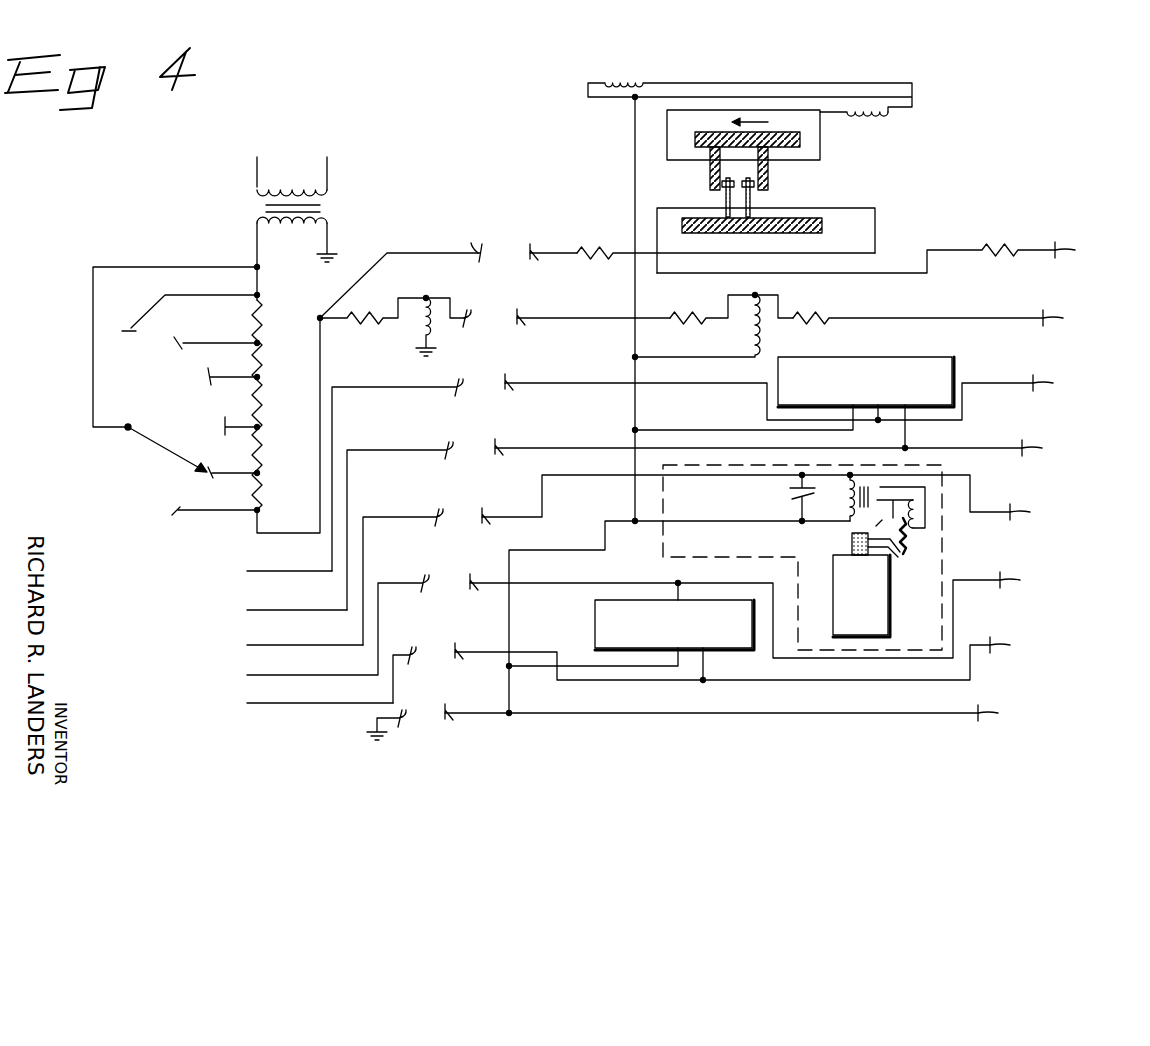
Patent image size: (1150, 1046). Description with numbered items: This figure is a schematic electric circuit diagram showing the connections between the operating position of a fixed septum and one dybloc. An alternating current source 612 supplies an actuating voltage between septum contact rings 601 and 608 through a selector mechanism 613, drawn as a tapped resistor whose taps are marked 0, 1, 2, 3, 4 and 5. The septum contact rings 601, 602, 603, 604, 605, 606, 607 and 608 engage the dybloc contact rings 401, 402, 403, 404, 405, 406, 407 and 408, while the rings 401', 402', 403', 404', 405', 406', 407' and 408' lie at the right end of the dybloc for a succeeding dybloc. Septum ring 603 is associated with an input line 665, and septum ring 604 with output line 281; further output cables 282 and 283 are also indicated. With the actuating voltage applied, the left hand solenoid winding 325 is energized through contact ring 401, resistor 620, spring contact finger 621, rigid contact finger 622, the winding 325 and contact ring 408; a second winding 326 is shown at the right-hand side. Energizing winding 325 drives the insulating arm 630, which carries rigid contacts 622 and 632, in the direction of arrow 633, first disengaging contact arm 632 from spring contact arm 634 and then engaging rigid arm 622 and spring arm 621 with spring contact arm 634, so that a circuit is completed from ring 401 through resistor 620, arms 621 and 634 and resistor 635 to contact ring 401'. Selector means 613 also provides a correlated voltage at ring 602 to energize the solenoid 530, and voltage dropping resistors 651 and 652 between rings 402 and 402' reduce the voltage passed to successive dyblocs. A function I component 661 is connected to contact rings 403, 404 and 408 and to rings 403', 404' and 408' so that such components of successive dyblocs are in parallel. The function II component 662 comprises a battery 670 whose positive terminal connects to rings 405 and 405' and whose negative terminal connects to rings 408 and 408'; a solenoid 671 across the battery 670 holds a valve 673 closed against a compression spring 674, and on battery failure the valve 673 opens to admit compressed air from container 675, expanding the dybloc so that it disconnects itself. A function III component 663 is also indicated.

The alternating current source 612 is at (255, 166).
The selector mechanism 613 is at (150, 387).
The switch position 0 is at (122, 323).
The switch position 1 is at (180, 332).
The switch position 2 is at (214, 368).
The switch position 3 is at (232, 417).
The switch position 4 is at (224, 465).
The switch position 5 is at (192, 501).
The septum contact ring 601 is at (478, 252).
The septum contact ring 602 is at (404, 323).
The septum contact ring 603 is at (403, 463).
The septum contact ring 604 is at (402, 517).
The septum contact ring 605 is at (406, 566).
The septum contact ring 606 is at (343, 614).
The septum contact ring 607 is at (410, 664).
The septum contact ring 608 is at (397, 714).
The input line 665 is at (308, 568).
The output line 281 is at (314, 606).
The output cable 282 is at (319, 641).
The output cable 283 is at (324, 699).
The left hand solenoid winding 325 is at (618, 88).
The coil 326 is at (880, 116).
The insulating arm 630 is at (786, 130).
The arrow 633 is at (750, 120).
The rigid contact arm 632 is at (710, 173).
The rigid contact finger 622 is at (768, 174).
The spring contact arm 634 is at (726, 200).
The spring contact finger 621 is at (752, 203).
The resistor 620 is at (601, 248).
The contact ring 401 is at (553, 263).
The contact ring 401' is at (1082, 250).
The resistor 635 is at (1005, 247).
The contact ring 402 is at (593, 322).
The contact ring 402' is at (1074, 318).
The voltage dropping resistor 651 is at (690, 313).
The voltage dropping resistor 652 is at (822, 316).
The solenoid 530 is at (762, 333).
The function I component 661 is at (955, 365).
The contact ring 403 is at (769, 398).
The contact ring 403' is at (1061, 383).
The contact ring 404 is at (758, 437).
The contact ring 404' is at (1050, 448).
The contact ring 405 is at (746, 507).
The contact ring 405' is at (1038, 512).
The battery 670 is at (790, 501).
The solenoid 671 is at (857, 486).
The valve 673 is at (851, 541).
The compression spring 674 is at (906, 540).
The function II component 662 is at (942, 568).
The container 675 is at (890, 602).
The contact ring 406 is at (735, 616).
The output terminal 406' is at (1028, 580).
The function III component 663 is at (595, 612).
The contact ring 407 is at (722, 663).
The output terminal 407' is at (1015, 645).
The contact ring 408 is at (711, 722).
The contact ring 408' is at (1004, 713).